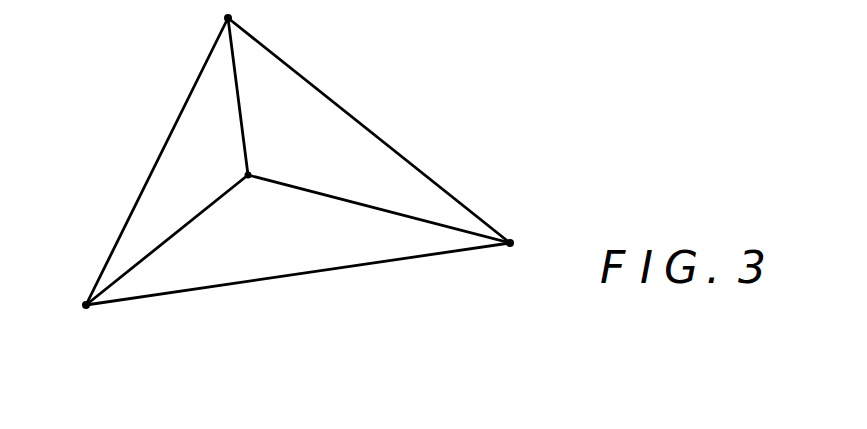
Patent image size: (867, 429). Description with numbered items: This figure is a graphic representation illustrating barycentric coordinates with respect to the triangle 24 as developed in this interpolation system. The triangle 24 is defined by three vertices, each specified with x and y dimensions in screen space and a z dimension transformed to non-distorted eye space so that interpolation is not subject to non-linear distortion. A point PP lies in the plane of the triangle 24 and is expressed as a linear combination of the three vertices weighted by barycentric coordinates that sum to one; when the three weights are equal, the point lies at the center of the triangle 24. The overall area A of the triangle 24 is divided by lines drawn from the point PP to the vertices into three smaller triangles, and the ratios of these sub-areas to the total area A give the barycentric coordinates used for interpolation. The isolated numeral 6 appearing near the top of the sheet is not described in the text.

The triangle 24 is at (422, 172).
The area A is at (322, 127).
The sheet numeral 6 is at (702, 19).